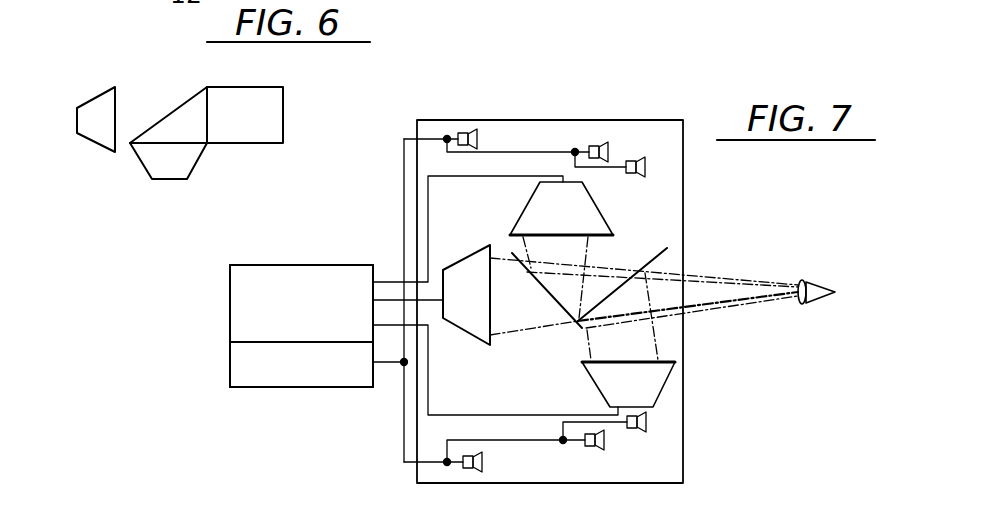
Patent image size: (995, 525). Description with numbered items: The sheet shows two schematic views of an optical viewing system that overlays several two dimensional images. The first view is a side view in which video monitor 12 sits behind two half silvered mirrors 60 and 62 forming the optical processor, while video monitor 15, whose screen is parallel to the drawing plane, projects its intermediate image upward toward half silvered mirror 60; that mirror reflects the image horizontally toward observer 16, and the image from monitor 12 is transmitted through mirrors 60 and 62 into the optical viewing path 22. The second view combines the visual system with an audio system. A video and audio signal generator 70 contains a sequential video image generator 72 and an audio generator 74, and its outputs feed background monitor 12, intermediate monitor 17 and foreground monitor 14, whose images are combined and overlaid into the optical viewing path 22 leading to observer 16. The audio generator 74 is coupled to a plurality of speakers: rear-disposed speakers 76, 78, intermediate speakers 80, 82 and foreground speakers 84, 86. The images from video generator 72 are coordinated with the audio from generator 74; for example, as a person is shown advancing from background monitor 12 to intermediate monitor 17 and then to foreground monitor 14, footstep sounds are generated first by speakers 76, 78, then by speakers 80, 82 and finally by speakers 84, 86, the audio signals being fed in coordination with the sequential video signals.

In FIG. 6, the video monitor 12 is at (77, 108).
In FIG. 7, the video monitor 12 is at (490, 345).
In FIG. 7, the video monitor 14 is at (672, 390).
In FIG. 6, the video monitor 15 is at (198, 163).
In FIG. 7, the observer 16 is at (818, 283).
In FIG. 7, the intermediate monitor 17 is at (601, 211).
In FIG. 7, the optical viewing path 22 is at (702, 295).
In FIG. 6, the half silvered mirror 60 is at (191, 98).
In FIG. 6, the half silvered mirror 62 is at (283, 112).
In FIG. 7, the video and audio signal generator 70 is at (275, 301).
In FIG. 7, the sequential video image generator 72 is at (230, 310).
In FIG. 7, the audio generator 74 is at (230, 370).
In FIG. 7, the speaker 76 is at (478, 146).
In FIG. 7, the speaker 78 is at (482, 463).
In FIG. 7, the intermediate speaker 80 is at (601, 142).
In FIG. 7, the intermediate speaker 82 is at (595, 449).
In FIG. 7, the foreground speaker 84 is at (638, 156).
In FIG. 7, the foreground speaker 86 is at (636, 432).